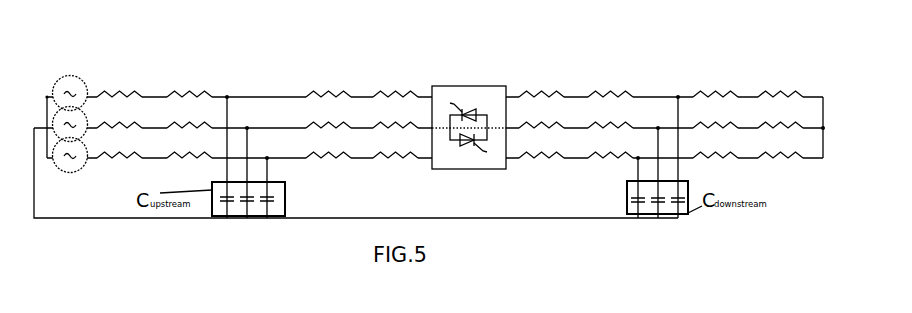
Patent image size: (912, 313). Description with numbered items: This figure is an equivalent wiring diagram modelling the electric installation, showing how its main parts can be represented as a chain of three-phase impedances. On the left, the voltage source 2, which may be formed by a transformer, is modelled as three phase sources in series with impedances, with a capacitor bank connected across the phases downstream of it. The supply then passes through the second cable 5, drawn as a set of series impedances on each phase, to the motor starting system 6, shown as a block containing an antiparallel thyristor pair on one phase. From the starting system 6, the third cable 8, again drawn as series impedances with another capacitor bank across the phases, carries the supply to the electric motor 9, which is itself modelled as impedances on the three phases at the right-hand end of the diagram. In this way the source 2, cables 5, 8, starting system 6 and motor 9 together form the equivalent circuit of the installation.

The voltage source 2 is at (159, 97).
The second cable 5 is at (365, 97).
The motor starting system 6 is at (467, 85).
The third cable 8 is at (577, 97).
The electric motor 9 is at (747, 97).